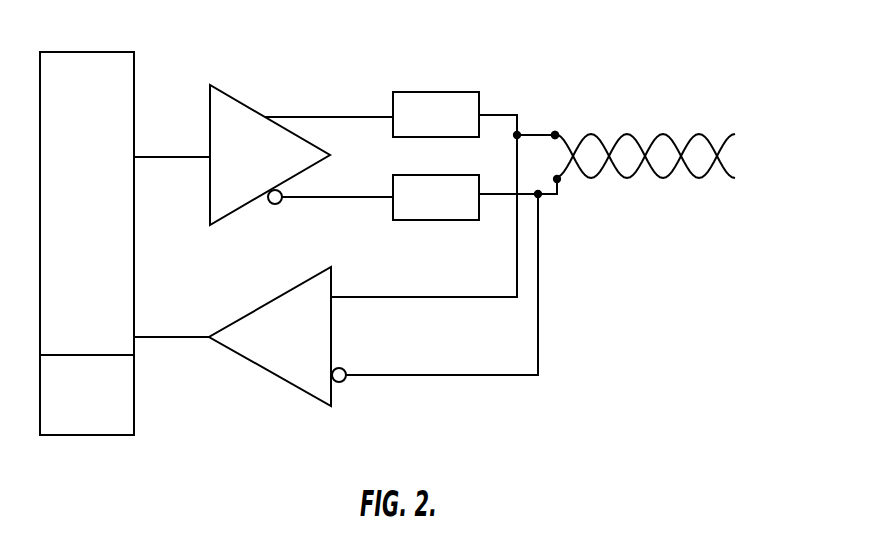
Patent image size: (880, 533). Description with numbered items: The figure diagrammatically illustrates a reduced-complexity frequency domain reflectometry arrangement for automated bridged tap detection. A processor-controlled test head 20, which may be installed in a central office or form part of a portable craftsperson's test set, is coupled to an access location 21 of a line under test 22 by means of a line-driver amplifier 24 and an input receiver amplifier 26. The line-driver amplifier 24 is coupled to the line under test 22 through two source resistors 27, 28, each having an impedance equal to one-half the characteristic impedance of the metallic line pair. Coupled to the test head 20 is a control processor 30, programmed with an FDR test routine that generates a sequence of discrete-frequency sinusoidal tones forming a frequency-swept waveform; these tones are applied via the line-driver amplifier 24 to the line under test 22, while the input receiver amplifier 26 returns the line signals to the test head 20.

The test head 20 is at (82, 52).
The access location 21 is at (555, 133).
The line under test 22 is at (738, 158).
The line-driver amplifier 24 is at (240, 102).
The input receiver amplifier 26 is at (258, 308).
The source resistor 27 is at (405, 138).
The source resistor 28 is at (445, 175).
The control processor 30 is at (72, 435).